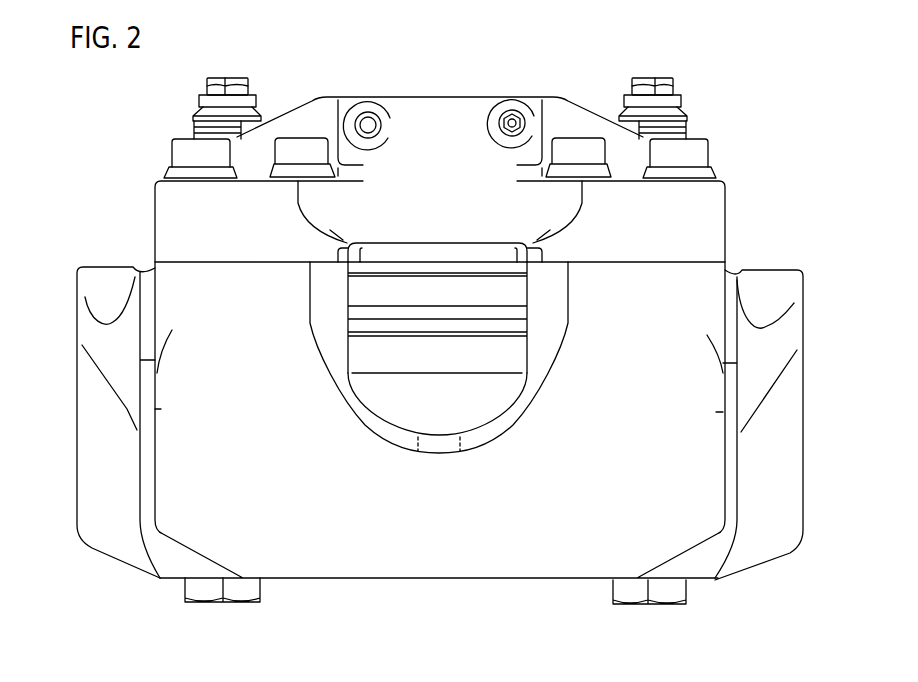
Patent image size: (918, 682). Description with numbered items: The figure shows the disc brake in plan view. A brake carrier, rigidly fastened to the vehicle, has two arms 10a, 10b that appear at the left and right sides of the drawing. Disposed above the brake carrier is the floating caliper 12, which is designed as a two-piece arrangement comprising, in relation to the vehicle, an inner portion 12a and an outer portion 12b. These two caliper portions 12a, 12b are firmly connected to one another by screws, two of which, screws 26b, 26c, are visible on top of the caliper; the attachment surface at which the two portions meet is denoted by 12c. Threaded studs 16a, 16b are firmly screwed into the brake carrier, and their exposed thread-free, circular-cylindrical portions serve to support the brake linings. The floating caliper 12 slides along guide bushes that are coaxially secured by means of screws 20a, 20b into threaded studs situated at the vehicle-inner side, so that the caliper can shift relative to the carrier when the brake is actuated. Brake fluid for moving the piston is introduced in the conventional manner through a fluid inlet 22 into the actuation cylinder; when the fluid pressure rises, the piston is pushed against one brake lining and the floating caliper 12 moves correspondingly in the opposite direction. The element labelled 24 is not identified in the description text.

The arm of brake carrier 10a is at (103, 338).
The arm of brake carrier 10b is at (785, 420).
The floating caliper 12 is at (736, 225).
The inner portion 12a is at (668, 242).
The outer portion 12b is at (659, 322).
The attachment surface 12c is at (222, 263).
The threaded stud 16a is at (240, 598).
The threaded stud 16b is at (628, 600).
The screw 20a is at (238, 78).
The screw 20b is at (642, 80).
The fluid inlet 22 is at (376, 133).
The pad spring 24 is at (475, 402).
The screw 26b is at (315, 148).
The screw 26c is at (587, 152).